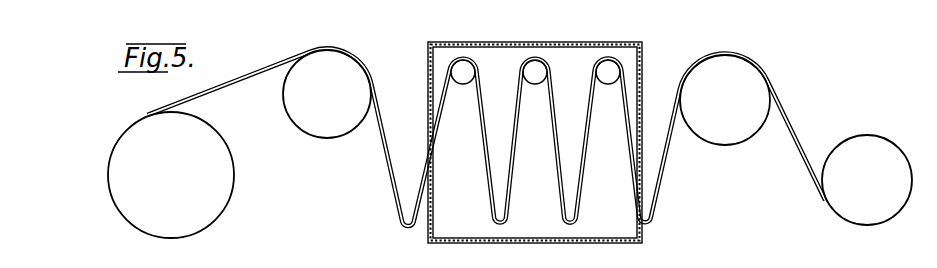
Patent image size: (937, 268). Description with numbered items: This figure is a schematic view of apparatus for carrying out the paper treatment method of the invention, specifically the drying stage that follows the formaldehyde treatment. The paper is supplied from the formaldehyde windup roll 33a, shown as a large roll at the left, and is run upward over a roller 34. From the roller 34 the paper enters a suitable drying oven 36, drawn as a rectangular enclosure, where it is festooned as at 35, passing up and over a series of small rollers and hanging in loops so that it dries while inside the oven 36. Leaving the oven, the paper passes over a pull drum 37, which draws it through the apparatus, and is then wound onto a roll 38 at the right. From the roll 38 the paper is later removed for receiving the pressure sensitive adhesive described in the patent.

The formaldehyde windup roll 33a is at (110, 186).
The roller 34 is at (343, 68).
The festooned paper 35 is at (480, 95).
The drying oven 36 is at (545, 43).
The pull drum 37 is at (750, 82).
The roll 38 is at (875, 144).